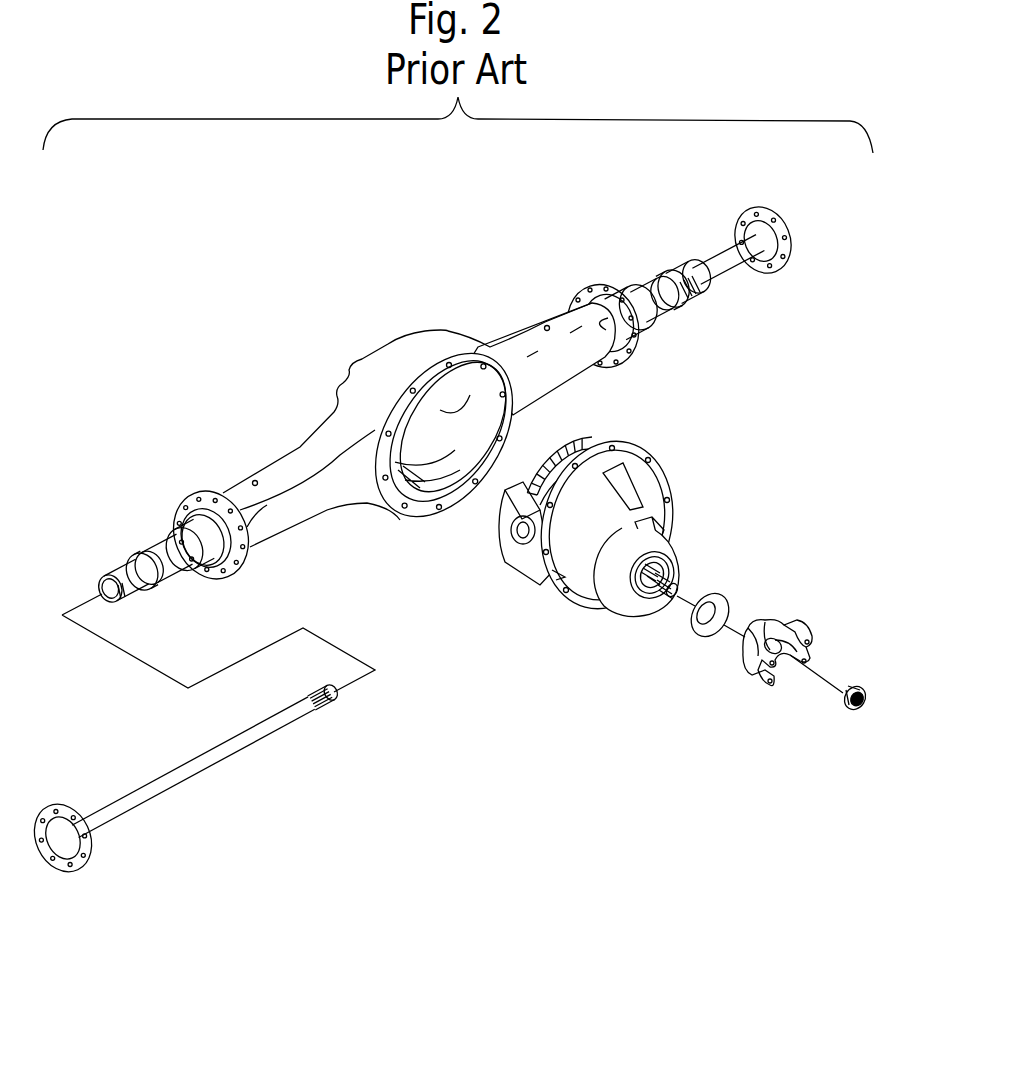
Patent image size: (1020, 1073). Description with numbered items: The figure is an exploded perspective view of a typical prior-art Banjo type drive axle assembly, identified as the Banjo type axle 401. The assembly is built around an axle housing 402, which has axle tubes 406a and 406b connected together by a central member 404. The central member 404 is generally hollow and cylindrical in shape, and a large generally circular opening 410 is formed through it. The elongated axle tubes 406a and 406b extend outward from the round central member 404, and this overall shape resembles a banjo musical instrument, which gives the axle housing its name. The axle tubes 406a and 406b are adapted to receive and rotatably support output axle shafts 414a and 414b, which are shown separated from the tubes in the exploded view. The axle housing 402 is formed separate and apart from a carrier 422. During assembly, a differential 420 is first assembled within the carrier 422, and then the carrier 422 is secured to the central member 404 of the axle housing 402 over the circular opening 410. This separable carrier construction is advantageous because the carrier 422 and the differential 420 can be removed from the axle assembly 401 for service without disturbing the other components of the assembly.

The Banjo type axle 401 is at (484, 236).
The axle housing 402 is at (449, 320).
The central member 404 is at (392, 360).
The axle tube 406a is at (291, 470).
The axle tube 406b is at (565, 328).
The circular opening 410 is at (392, 462).
The output axle shaft 414a is at (195, 774).
The output axle shaft 414b is at (727, 254).
The differential 420 is at (614, 425).
The carrier 422 is at (705, 474).